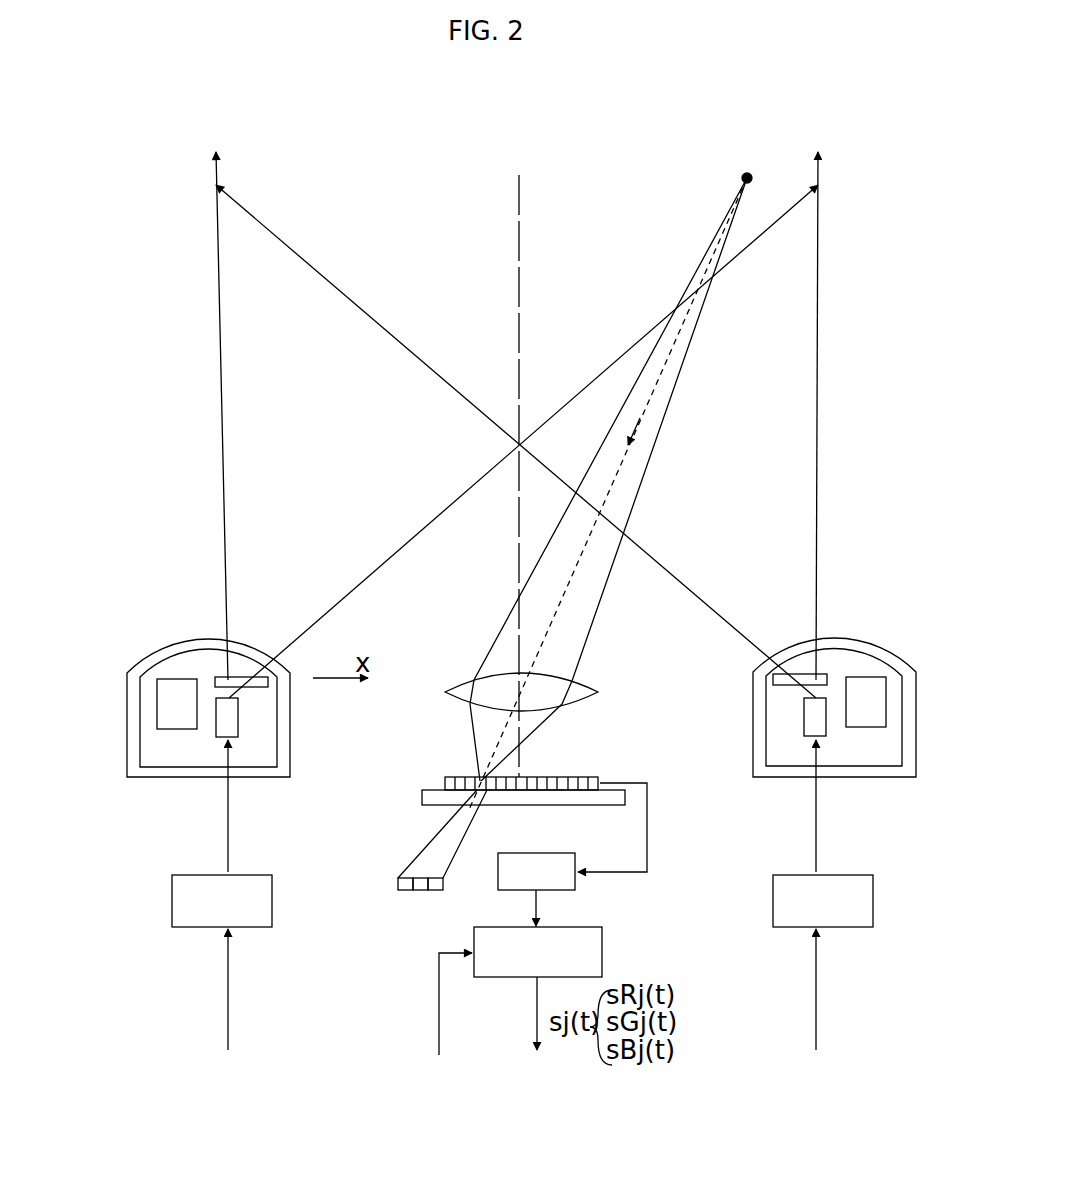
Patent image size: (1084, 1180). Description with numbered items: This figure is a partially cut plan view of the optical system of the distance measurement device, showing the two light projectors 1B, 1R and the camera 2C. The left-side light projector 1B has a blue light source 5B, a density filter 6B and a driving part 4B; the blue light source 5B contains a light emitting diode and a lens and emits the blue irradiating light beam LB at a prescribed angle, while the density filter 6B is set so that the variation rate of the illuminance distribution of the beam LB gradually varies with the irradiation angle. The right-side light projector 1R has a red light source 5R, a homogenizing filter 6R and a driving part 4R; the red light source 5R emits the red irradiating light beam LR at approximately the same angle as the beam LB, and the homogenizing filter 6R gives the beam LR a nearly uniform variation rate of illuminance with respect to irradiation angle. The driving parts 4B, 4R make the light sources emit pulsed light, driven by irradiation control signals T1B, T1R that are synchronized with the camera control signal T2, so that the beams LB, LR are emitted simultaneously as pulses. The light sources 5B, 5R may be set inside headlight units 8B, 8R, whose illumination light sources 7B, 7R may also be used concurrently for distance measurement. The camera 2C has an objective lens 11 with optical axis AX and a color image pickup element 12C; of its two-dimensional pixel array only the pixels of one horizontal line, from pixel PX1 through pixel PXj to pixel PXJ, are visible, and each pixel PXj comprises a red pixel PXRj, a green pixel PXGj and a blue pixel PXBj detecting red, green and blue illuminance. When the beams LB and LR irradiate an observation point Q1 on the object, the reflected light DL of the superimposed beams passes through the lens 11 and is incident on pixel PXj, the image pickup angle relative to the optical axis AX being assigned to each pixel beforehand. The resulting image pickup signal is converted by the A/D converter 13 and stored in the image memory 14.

The left-side light projector 1B is at (233, 691).
The right-side light projector 1R is at (820, 686).
The camera 2C is at (570, 736).
The driving part 4B is at (190, 927).
The driving part 4R is at (853, 927).
The blue light source 5B is at (238, 717).
The red light source 5R is at (804, 735).
The density filter 6B is at (268, 684).
The homogenizing filter 6R is at (788, 686).
The illumination light source 7B is at (172, 729).
The illumination light source 7R is at (866, 727).
The headlight unit 8B is at (180, 777).
The headlight unit 8R is at (884, 777).
The objective lens 11 is at (598, 690).
The image pickup element 12C is at (612, 783).
The A/D converter 13 is at (575, 880).
The image memory 14 is at (602, 945).
The optical axis AX is at (520, 255).
The observation point Q1 is at (743, 180).
The reflected light DL is at (680, 372).
The irradiating light beam LB is at (221, 432).
The irradiating light beam LR is at (818, 432).
The pixel PX1 is at (448, 792).
The pixel PXj is at (483, 792).
The pixel PXJ is at (593, 792).
The red pixel PXRj is at (400, 890).
The green pixel PXGj is at (415, 890).
The blue pixel PXBj is at (430, 890).
The irradiation control signal T1B is at (259, 989).
The irradiation control signal T1R is at (788, 989).
The camera control signal T2 is at (460, 1004).